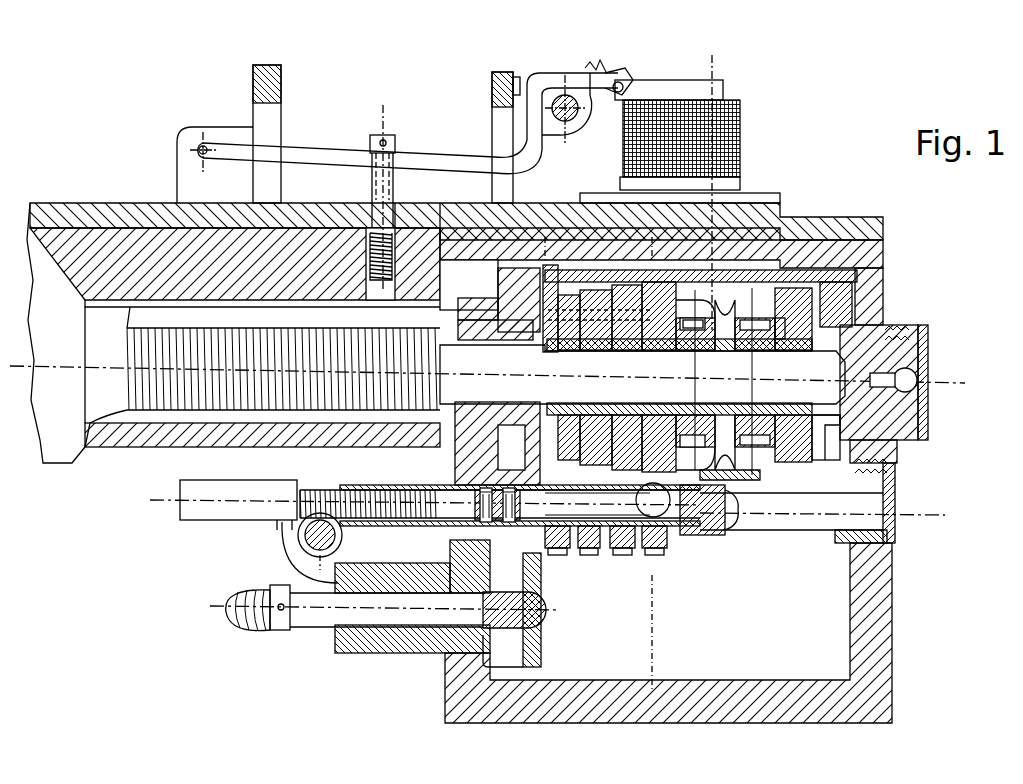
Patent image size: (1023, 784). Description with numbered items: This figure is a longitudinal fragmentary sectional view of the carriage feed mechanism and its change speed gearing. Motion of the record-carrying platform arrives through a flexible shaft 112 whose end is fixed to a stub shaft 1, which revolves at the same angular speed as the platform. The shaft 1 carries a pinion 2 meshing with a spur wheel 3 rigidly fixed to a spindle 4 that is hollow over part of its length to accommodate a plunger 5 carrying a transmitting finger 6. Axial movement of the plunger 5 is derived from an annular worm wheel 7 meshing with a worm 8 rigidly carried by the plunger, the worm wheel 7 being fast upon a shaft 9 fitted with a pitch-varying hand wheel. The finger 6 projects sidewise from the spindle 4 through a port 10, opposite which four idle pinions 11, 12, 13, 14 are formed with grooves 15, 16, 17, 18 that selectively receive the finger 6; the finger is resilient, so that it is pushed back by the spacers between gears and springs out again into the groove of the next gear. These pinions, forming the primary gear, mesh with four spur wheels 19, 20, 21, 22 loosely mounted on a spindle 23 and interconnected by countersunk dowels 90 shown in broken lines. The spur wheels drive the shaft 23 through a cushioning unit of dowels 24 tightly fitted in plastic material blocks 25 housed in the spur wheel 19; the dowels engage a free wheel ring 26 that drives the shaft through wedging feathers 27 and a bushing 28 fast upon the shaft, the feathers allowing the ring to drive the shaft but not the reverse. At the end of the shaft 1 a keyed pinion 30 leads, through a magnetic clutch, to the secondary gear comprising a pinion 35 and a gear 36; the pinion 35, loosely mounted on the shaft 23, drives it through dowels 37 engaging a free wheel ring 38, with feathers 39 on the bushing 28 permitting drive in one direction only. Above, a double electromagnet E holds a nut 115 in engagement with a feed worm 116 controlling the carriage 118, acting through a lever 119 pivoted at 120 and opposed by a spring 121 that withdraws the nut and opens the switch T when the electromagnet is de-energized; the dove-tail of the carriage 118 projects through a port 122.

The carriage 118 is at (70, 233).
The pivot 120 is at (197, 153).
The lever 119 is at (305, 160).
The spring 121 is at (598, 70).
The switch T is at (722, 86).
The electromagnet E is at (736, 152).
The nut 115 is at (362, 235).
The port 122 is at (406, 216).
The pinion 35 is at (800, 292).
The feed worm 116 is at (185, 400).
The spindle 23 is at (562, 388).
The spur wheel 22 is at (568, 322).
The spur wheel 21 is at (594, 322).
The spur wheel 20 is at (622, 332).
The plastic material blocks 25 is at (656, 332).
The dowels 24 is at (688, 332).
The spur wheel 19 is at (684, 310).
The wedging feathers 27 is at (712, 322).
The free wheel ring 26 is at (743, 367).
The free wheel ring 38 is at (750, 385).
The bushing 28 is at (745, 344).
The feathers 39 is at (772, 332).
The dowels 37 is at (792, 326).
The countersunk dowels 90 is at (607, 387).
The gear 36 is at (820, 413).
The groove 15 is at (693, 483).
The annular worm wheel 7 is at (273, 538).
The worm 8 is at (325, 492).
The plunger 5 is at (386, 487).
The spindle 4 is at (442, 492).
The shaft 9 is at (302, 548).
The groove 18 is at (568, 496).
The port 10 is at (596, 497).
The groove 17 is at (620, 496).
The groove 16 is at (650, 502).
The pinion 14 is at (562, 556).
The pinion 13 is at (590, 556).
The pinion 12 is at (622, 556).
The pinion 11 is at (656, 556).
The transmitting finger 6 is at (681, 546).
The flexible shaft 112 is at (236, 598).
The stub shaft 1 is at (298, 620).
The spur wheel 3 is at (546, 590).
The pinion 30 is at (542, 650).
The pinion 2 is at (503, 651).